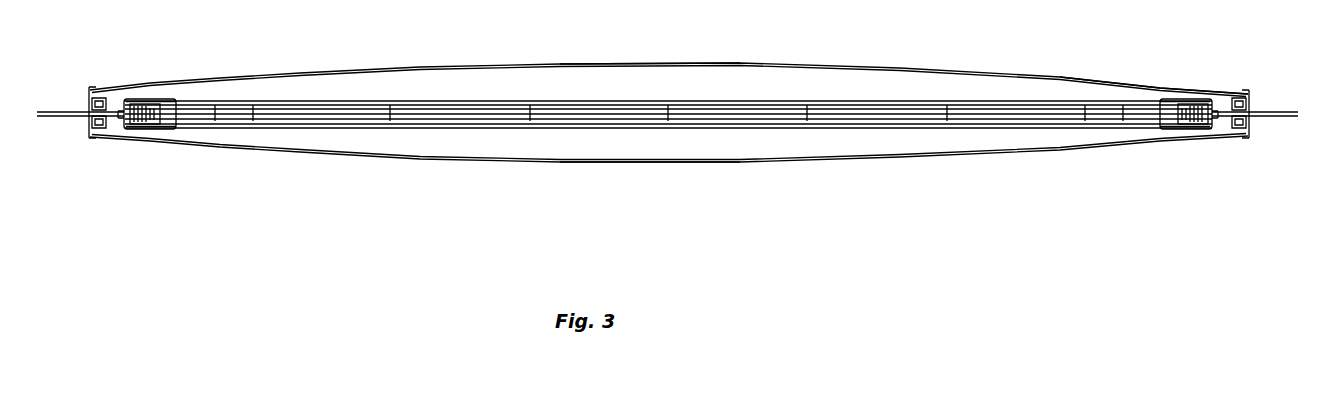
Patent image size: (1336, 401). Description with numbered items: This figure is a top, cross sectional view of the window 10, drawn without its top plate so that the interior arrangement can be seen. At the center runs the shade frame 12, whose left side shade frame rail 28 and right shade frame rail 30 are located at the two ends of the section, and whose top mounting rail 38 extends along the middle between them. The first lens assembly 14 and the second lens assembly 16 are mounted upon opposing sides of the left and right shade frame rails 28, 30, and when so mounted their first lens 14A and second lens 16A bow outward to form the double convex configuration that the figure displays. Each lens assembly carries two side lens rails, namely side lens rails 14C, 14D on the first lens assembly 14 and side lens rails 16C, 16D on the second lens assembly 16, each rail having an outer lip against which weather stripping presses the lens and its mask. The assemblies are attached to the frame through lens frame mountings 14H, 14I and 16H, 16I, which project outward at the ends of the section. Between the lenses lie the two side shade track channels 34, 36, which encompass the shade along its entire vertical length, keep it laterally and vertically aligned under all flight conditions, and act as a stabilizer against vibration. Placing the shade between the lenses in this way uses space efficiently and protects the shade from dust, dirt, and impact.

The window 10 is at (929, 173).
The shade frame 12 is at (1162, 92).
The first lens assembly 14 is at (525, 162).
The first lens 14A is at (630, 165).
The side lens rail 14C is at (1252, 128).
The side lens rail 14D is at (90, 128).
The lens frame mounting 14H is at (1273, 118).
The lens frame mounting 14I is at (68, 116).
The second lens assembly 16 is at (513, 63).
The second lens 16A is at (628, 63).
The side lens rail 16C is at (1250, 95).
The side lens rail 16D is at (84, 93).
The lens frame mounting 16H is at (1273, 110).
The lens frame mounting 16I is at (68, 110).
The left side shade frame rail 28 is at (110, 107).
The right shade frame rail 30 is at (1228, 112).
The side shade track channel 34 is at (1188, 128).
The side shade track channel 36 is at (155, 128).
The top mounting rail 38 is at (968, 110).